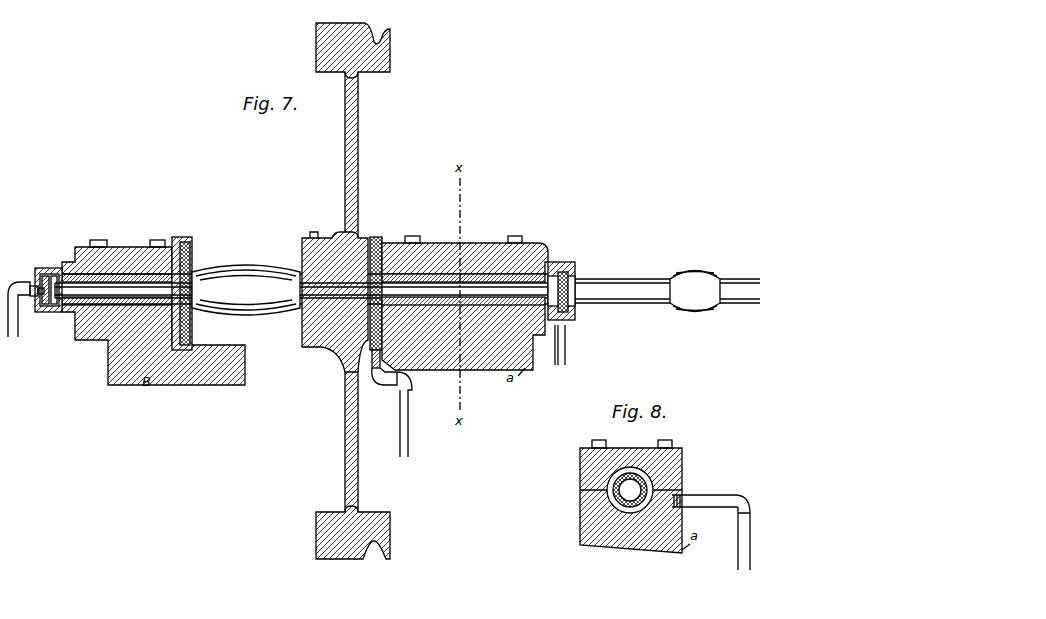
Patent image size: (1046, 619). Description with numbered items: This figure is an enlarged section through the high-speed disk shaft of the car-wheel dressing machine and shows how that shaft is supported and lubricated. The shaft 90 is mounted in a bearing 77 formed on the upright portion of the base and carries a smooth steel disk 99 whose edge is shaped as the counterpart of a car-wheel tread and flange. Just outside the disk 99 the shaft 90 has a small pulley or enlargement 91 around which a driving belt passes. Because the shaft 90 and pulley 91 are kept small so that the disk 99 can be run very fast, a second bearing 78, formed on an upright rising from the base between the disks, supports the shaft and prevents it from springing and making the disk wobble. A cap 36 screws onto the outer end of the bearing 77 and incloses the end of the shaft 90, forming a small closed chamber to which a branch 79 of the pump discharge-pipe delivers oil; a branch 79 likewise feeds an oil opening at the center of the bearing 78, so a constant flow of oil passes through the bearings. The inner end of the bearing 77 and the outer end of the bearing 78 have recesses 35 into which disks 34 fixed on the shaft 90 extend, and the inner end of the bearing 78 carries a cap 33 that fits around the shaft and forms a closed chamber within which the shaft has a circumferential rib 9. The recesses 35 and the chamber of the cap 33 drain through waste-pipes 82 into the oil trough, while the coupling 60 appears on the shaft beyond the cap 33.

In FIG. 7, the disk 99 is at (392, 150).
In FIG. 7, the bearing 77 is at (133, 246).
In FIG. 7, the cap 36 is at (56, 268).
In FIG. 7, the branch 79 is at (20, 324).
In FIG. 8, the branch 79 is at (751, 545).
In FIG. 7, the recess 35 is at (192, 251).
In FIG. 7, the disk 34 is at (188, 302).
In FIG. 7, the pulley 91 is at (262, 296).
In FIG. 7, the bearing 78 is at (437, 246).
In FIG. 8, the bearing 78 is at (581, 467).
In FIG. 7, the cap 33 is at (576, 318).
In FIG. 7, the circumferential rib 9 is at (557, 290).
In FIG. 7, the shaft 90 is at (634, 279).
In FIG. 8, the shaft 90 is at (622, 494).
In FIG. 7, the coupling 60 is at (695, 291).
In FIG. 7, the waste-pipe 82 is at (568, 354).